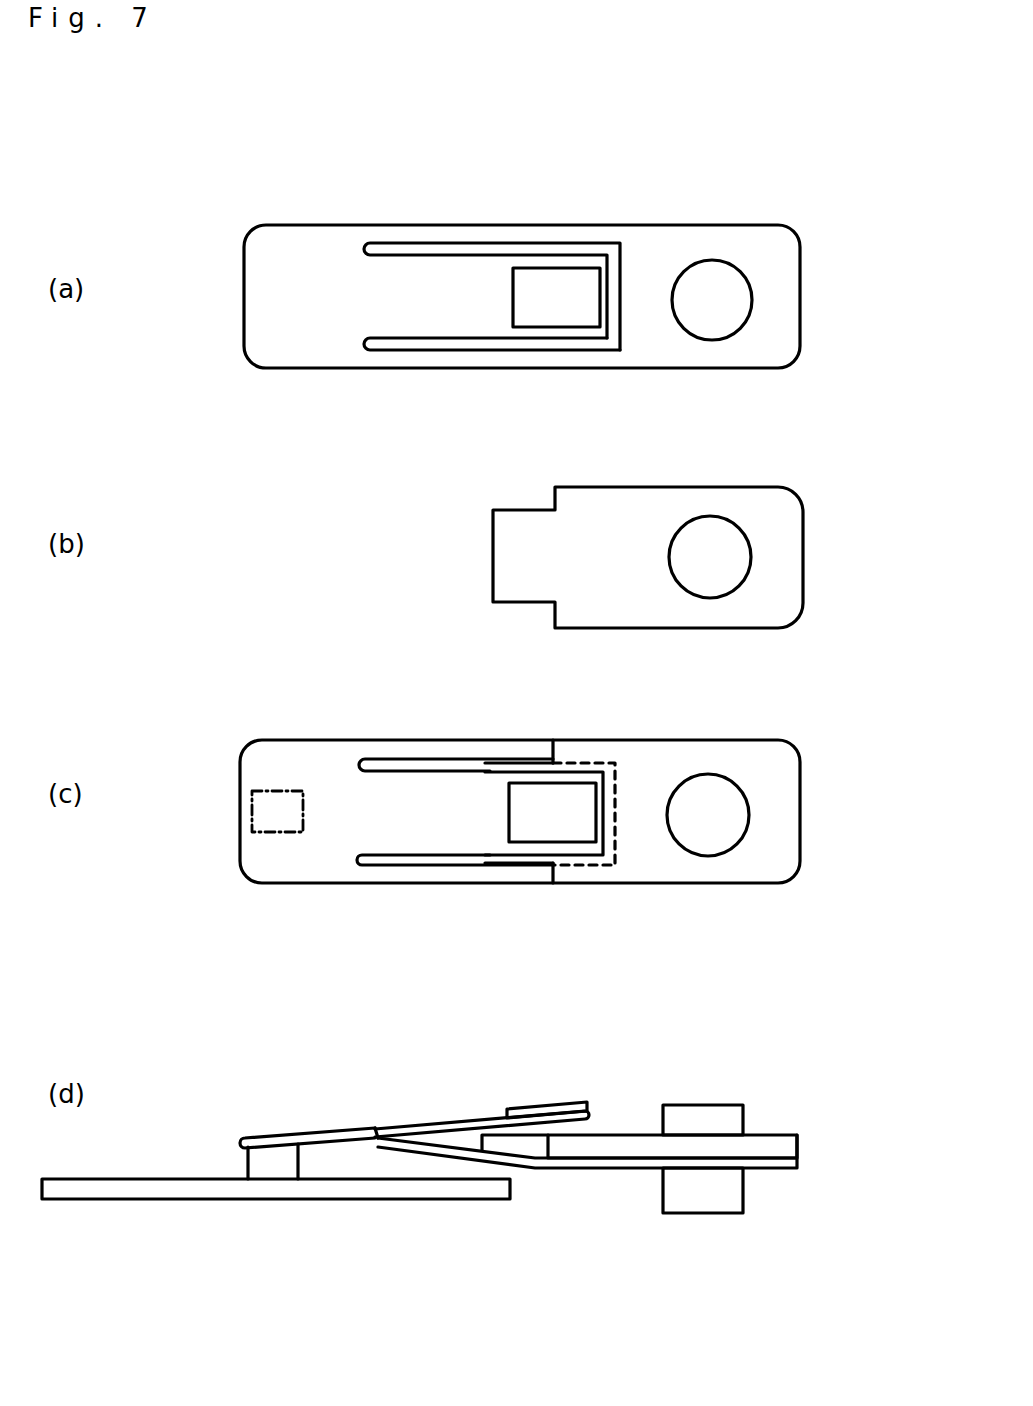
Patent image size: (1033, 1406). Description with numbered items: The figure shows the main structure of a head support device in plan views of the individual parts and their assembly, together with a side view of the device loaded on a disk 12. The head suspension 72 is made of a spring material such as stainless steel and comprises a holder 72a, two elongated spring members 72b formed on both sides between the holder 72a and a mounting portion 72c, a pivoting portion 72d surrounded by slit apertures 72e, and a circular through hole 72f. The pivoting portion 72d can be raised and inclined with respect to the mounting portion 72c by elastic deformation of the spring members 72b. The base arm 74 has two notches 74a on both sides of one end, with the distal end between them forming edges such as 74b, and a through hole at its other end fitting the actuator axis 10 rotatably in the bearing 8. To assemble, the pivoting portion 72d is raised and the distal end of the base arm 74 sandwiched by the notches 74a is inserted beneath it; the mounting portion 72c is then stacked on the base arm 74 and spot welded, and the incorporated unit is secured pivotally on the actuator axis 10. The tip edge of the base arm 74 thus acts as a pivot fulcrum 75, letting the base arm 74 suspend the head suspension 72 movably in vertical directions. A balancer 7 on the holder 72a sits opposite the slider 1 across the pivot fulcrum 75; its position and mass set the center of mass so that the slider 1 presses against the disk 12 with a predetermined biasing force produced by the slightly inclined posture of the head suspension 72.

The head suspension 72 is at (767, 112).
The holder 72a is at (300, 265).
The spring members 72b is at (463, 238).
The mounting portion 72c is at (655, 256).
The pivoting portion 72d is at (497, 275).
The slit aperture 72e is at (400, 245).
The circular through hole 72f is at (713, 280).
The balancer 7 is at (575, 308).
The bearing 8 is at (717, 540).
The actuator axis 10 is at (715, 800).
The base arm 74 is at (635, 597).
The notches 74a is at (512, 492).
The lower edge of engaging tab 74b is at (508, 620).
The pivot fulcrum 75 is at (478, 1125).
The slider 1 is at (268, 1168).
The disk 12 is at (338, 1192).